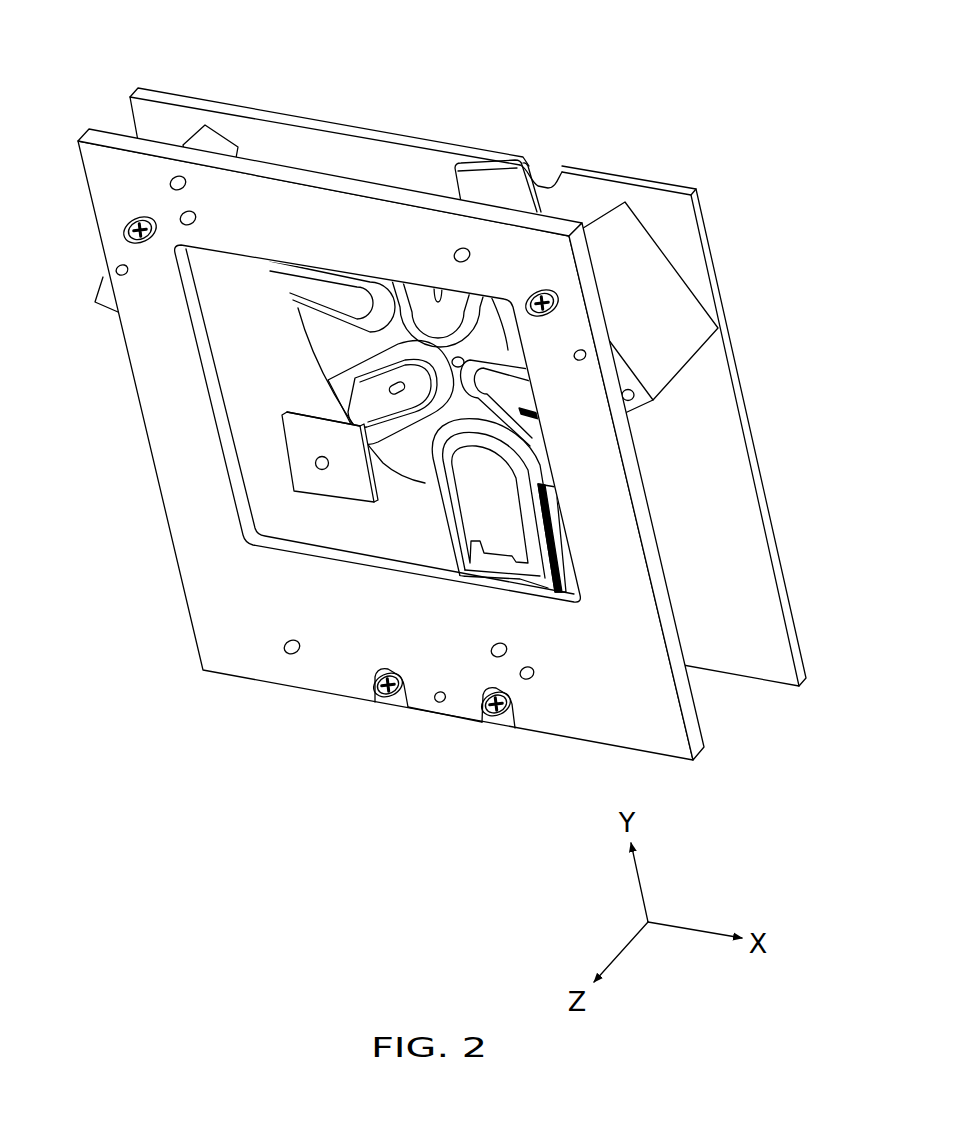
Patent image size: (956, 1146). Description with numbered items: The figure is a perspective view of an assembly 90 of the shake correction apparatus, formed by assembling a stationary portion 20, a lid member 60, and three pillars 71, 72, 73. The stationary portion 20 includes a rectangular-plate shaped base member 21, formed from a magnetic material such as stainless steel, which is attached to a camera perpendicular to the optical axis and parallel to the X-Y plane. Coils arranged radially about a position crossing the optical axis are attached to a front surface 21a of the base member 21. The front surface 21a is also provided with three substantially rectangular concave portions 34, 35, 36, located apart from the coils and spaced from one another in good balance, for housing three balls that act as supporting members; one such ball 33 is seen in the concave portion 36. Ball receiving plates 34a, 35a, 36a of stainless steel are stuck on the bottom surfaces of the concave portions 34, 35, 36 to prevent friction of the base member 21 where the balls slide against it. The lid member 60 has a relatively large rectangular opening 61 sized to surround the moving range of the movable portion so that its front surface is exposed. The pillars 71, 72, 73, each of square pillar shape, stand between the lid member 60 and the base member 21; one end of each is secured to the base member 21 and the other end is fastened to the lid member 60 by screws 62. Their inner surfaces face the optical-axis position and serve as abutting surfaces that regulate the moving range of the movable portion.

The stationary portion 20 is at (680, 151).
The base member 21 is at (340, 132).
The front surface 21a is at (728, 460).
The ball 33 is at (322, 470).
The concave portion 34 is at (502, 166).
The ball receiving plate 34a is at (473, 174).
The concave portion 35 is at (567, 571).
The ball receiving plate 35a is at (560, 537).
The concave portion 36 is at (290, 470).
The ball receiving plate 36a is at (290, 432).
The lid member 60 is at (155, 564).
The opening 61 is at (228, 370).
The screw 62 is at (126, 238).
The pillar 71 is at (195, 138).
The pillar 72 is at (675, 303).
The pillar 73 is at (440, 718).
The assembly 90 is at (503, 82).